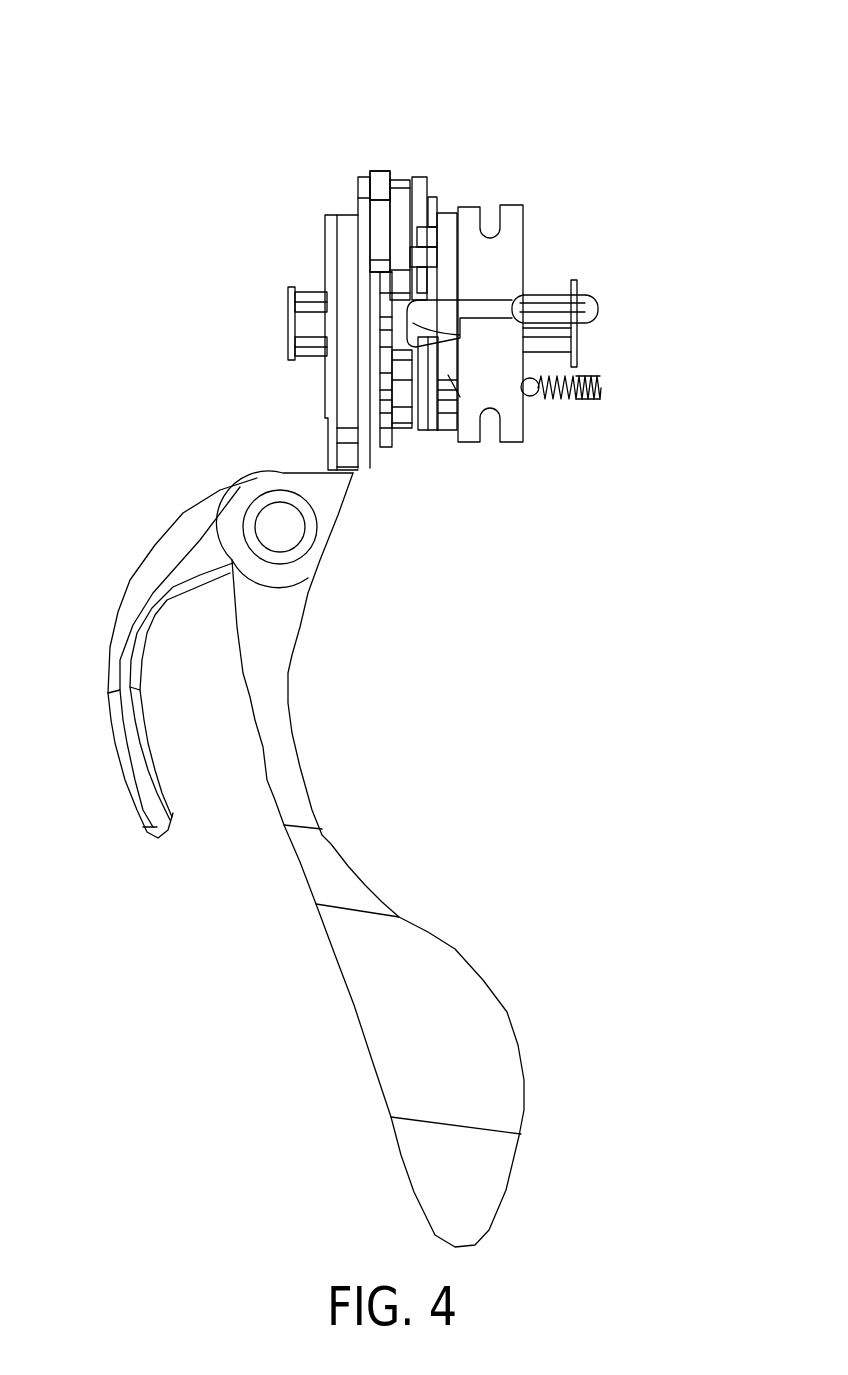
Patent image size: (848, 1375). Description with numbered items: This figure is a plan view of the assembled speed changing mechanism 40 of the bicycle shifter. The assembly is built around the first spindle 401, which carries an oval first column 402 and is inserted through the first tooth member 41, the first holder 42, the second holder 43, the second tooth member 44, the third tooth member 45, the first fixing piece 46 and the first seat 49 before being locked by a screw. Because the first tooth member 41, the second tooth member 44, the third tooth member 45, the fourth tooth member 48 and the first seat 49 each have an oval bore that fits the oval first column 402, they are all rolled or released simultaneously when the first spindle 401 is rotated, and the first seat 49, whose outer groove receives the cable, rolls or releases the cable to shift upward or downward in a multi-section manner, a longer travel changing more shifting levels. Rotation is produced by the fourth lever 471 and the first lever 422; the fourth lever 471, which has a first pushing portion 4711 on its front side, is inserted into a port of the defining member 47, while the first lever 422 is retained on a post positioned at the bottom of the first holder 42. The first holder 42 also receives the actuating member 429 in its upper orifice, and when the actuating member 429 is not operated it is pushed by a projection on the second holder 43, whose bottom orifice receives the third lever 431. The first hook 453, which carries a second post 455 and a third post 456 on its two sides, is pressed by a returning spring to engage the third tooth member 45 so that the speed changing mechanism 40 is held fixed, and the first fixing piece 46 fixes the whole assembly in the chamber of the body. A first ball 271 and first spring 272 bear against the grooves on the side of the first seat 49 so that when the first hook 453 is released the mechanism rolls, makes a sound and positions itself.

The speed changing mechanism 40 is at (256, 365).
The first tooth member 41 is at (327, 212).
The first holder 42 is at (355, 220).
The second holder 43 is at (380, 430).
The second tooth member 44 is at (387, 430).
The third tooth member 45 is at (400, 430).
The first fixing piece 46 is at (412, 177).
The defining member 47 is at (433, 197).
The fourth tooth member 48 is at (438, 225).
The first seat 49 is at (525, 242).
The first spindle 401 is at (295, 320).
The first column 402 is at (307, 292).
The first lever 422 is at (147, 550).
The actuating member 429 is at (370, 171).
The third lever 431 is at (300, 767).
The first hook 453 is at (398, 180).
The second post 455 is at (380, 240).
The third post 456 is at (440, 228).
The fourth lever 471 is at (597, 305).
The first pushing portion 4711 is at (462, 433).
The first ball 271 is at (533, 403).
The first spring 272 is at (565, 400).